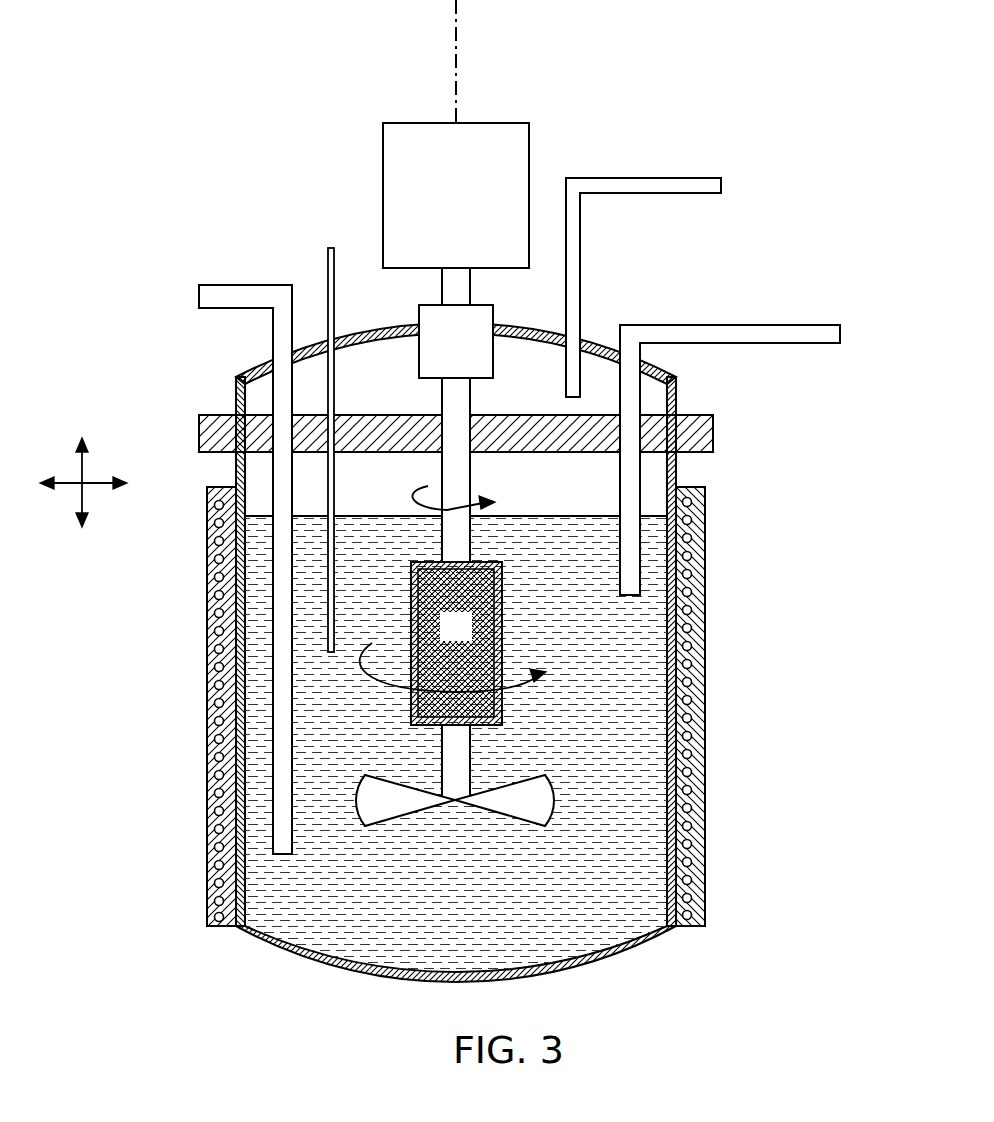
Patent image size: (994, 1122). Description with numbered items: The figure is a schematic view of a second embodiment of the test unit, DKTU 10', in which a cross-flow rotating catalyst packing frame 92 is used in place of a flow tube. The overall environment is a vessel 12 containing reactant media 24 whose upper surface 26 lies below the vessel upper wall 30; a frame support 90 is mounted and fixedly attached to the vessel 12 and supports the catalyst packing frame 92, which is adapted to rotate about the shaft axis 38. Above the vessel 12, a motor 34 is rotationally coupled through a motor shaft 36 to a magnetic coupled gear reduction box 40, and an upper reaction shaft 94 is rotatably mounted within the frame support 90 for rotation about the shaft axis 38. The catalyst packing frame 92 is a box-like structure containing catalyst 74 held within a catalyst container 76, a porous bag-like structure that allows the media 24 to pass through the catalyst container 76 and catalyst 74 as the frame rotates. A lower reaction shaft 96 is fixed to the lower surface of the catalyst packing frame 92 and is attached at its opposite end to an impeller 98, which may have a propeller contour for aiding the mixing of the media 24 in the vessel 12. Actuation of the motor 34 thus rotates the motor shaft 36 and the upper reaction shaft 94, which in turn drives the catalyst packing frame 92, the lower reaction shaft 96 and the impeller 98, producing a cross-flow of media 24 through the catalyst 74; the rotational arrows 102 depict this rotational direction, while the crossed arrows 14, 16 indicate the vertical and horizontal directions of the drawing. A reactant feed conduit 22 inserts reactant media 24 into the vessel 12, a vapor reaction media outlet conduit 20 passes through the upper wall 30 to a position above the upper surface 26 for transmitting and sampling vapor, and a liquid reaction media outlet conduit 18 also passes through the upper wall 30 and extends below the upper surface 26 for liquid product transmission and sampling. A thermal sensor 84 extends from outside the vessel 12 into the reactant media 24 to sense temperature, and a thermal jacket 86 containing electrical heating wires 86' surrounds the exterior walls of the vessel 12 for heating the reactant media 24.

The DKTU 10' is at (147, 98).
The vessel 12 is at (678, 390).
The vertical direction 14 is at (82, 465).
The horizontal direction 16 is at (95, 487).
The liquid reaction media outlet conduit 18 is at (718, 325).
The vapor reaction media outlet conduit 20 is at (637, 178).
The reactant feed conduit 22 is at (232, 285).
The reactant media 24 is at (448, 897).
The upper surface 26 is at (547, 516).
The upper wall 30 is at (597, 343).
The motor 34 is at (442, 205).
The motor shaft 36 is at (470, 288).
The shaft axis 38 is at (456, 28).
The magnetic coupled gear reduction box 40 is at (442, 352).
The catalyst 74 is at (456, 625).
The catalyst container 76 is at (483, 590).
The thermal sensor 84 is at (328, 268).
The thermal jacket 86 is at (498, 706).
The electrical heating wires 86' is at (505, 710).
The frame support 90 is at (713, 432).
The catalyst packing frame 92 is at (502, 620).
The upper reaction shaft 94 is at (442, 470).
The lower reaction shaft 96 is at (443, 757).
The impeller 98 is at (385, 830).
The rotational arrows 102 is at (415, 500).